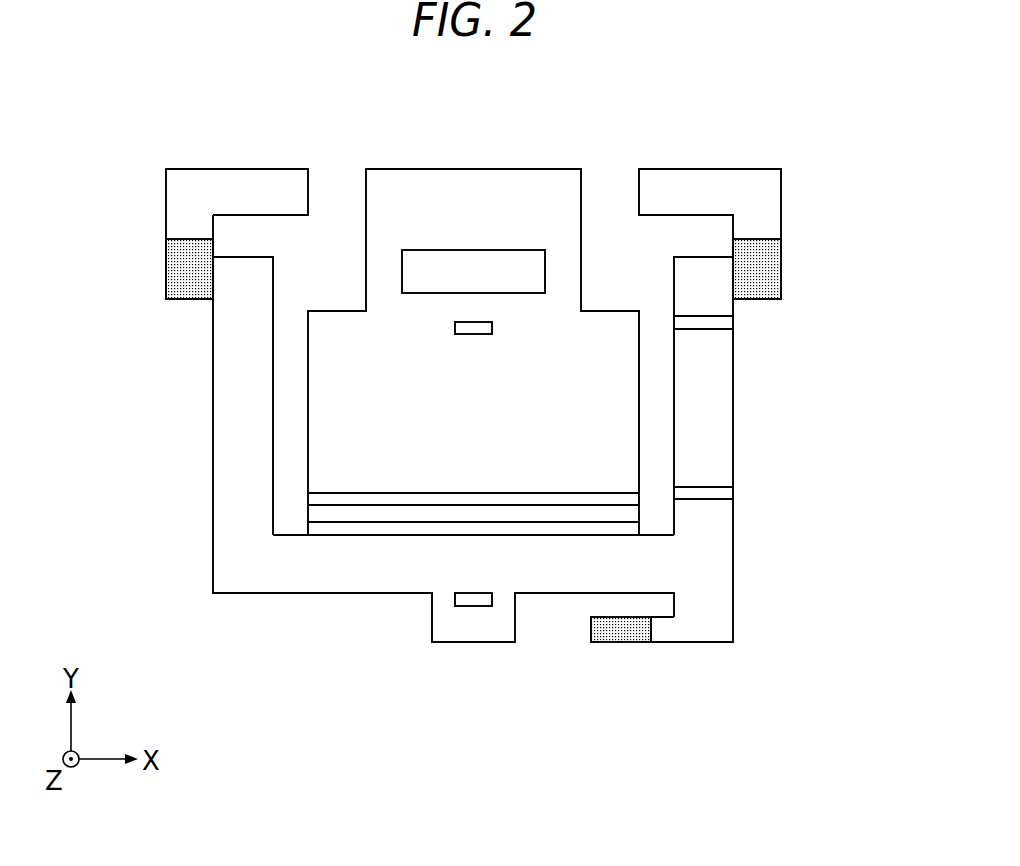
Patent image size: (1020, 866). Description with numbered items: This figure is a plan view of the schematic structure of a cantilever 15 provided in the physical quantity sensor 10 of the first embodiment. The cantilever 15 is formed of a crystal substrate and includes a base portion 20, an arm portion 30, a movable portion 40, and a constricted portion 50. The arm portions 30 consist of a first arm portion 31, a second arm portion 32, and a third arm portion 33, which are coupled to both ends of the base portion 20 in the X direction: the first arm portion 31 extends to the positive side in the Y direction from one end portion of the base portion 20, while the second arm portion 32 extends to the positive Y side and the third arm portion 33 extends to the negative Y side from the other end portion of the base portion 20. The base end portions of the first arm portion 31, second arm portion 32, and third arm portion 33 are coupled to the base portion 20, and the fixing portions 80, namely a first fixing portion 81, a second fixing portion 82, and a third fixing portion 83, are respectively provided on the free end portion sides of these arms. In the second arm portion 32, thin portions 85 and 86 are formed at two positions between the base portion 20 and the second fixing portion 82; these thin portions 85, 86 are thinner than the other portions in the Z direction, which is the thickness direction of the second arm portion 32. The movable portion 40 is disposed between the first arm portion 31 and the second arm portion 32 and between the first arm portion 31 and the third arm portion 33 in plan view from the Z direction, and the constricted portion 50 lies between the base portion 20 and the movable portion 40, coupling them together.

The semiconductor device / package 10 is at (796, 132).
The cantilever 15 is at (730, 572).
The base portion 20 is at (308, 588).
The arm portion 30 is at (474, 464).
The first arm portion 31 is at (218, 397).
The second arm portion 32 is at (728, 392).
The third arm portion 33 is at (698, 635).
The movable portion 40 is at (325, 442).
The constricted portion 50 is at (392, 518).
The fixing portions 80 is at (473, 499).
The first fixing portion 81 is at (172, 277).
The second fixing portion 82 is at (775, 277).
The third fixing portion 83 is at (615, 637).
The thin portion 85 is at (728, 495).
The thin portion 86 is at (728, 322).